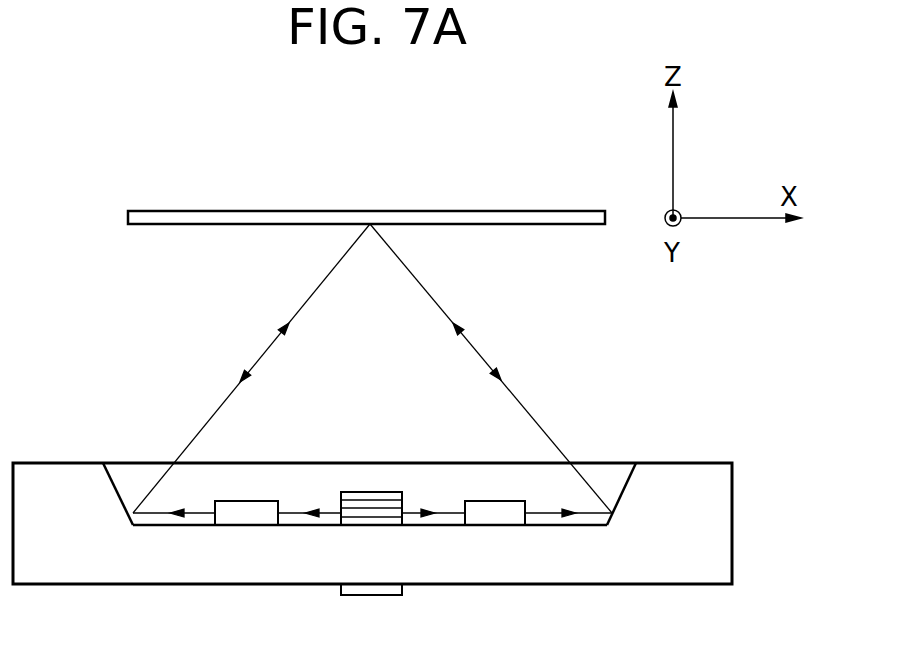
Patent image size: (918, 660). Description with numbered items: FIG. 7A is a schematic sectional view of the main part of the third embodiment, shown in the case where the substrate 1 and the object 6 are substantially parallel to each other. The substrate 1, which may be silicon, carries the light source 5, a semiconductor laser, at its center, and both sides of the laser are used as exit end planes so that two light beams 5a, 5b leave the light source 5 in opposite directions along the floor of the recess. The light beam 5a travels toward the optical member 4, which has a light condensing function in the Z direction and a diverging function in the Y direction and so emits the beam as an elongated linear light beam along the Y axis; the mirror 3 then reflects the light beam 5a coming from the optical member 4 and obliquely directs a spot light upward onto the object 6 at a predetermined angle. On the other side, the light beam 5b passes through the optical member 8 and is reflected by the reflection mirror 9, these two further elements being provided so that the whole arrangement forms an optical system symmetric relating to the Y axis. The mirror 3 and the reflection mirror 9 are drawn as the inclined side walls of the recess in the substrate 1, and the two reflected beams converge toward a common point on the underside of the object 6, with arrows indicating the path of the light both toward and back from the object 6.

The substrate 1 is at (691, 463).
The mirror 3 is at (112, 487).
The optical member 4 is at (247, 518).
The light source 5 is at (370, 503).
The light beam 5a is at (303, 512).
The light beam 5b is at (443, 512).
The object 6 is at (505, 211).
The optical member 8 is at (497, 518).
The reflection mirror 9 is at (628, 488).